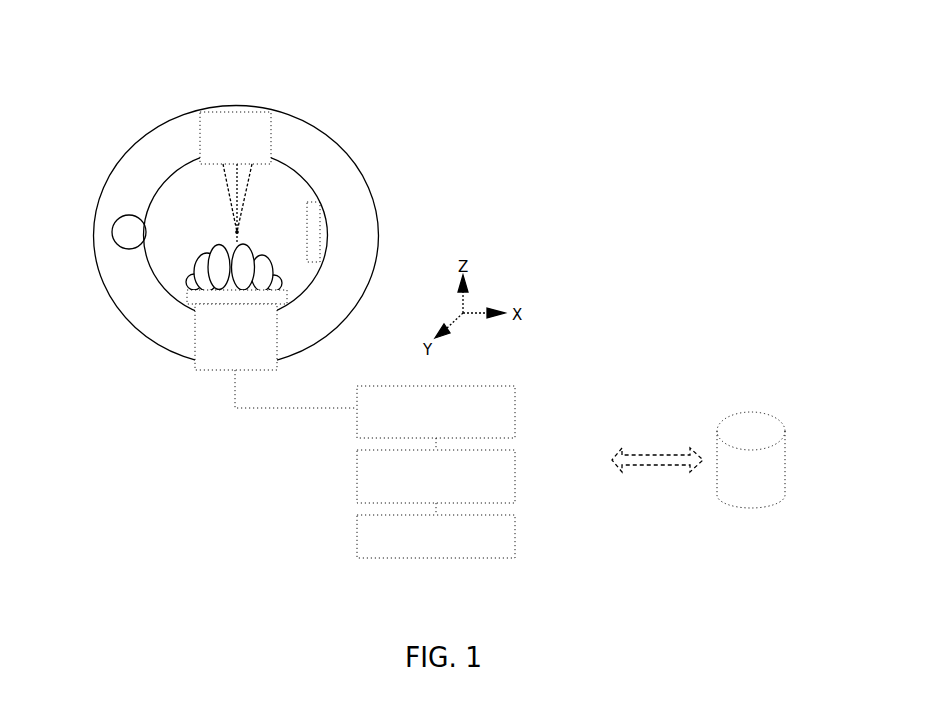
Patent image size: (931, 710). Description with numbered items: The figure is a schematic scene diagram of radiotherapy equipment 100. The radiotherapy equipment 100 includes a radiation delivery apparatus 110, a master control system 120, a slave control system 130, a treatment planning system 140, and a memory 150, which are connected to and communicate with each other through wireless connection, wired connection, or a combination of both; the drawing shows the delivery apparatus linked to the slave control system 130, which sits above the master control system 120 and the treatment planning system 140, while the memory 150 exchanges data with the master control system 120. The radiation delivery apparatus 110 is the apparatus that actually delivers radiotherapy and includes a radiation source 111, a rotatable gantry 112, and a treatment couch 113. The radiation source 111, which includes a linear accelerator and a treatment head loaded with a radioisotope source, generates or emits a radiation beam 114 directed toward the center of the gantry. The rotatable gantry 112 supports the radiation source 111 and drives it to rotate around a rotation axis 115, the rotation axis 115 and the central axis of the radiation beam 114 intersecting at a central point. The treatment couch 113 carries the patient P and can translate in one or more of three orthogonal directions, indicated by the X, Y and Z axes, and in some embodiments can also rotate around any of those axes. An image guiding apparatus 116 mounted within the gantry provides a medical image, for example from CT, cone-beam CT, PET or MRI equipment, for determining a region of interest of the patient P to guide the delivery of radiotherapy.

The radiotherapy equipment 100 is at (49, 42).
The radiation delivery apparatus 110 is at (303, 118).
The radiation source 111 is at (223, 112).
The rotatable gantry 112 is at (348, 151).
The treatment couch 113 is at (194, 343).
The radiation beam 114 is at (227, 193).
The rotation axis 115 is at (237, 232).
The image guiding apparatus 116 is at (325, 220).
The patient P is at (188, 279).
The master control system 120 is at (516, 472).
The slave control system 130 is at (516, 408).
The treatment planning system 140 is at (516, 533).
The memory 150 is at (787, 457).